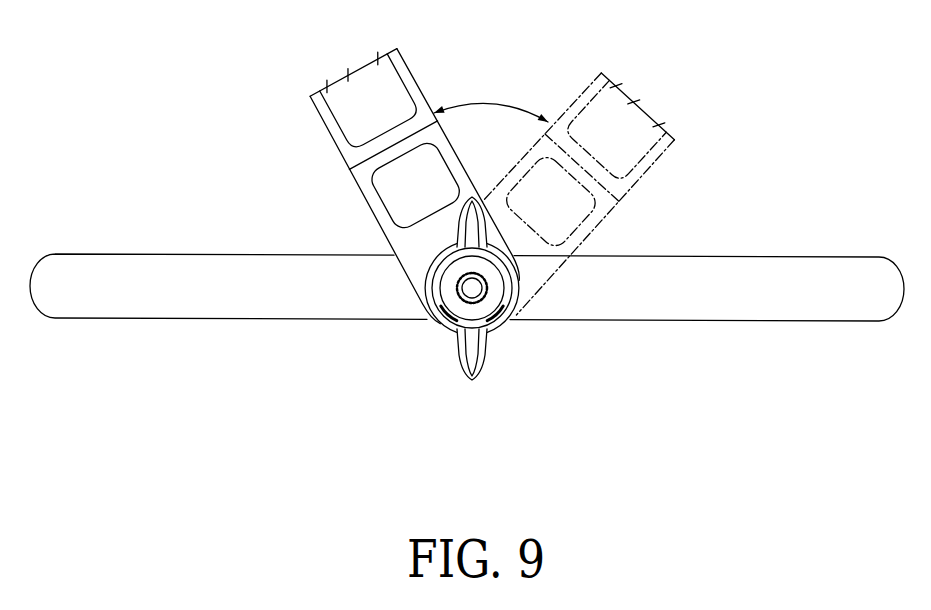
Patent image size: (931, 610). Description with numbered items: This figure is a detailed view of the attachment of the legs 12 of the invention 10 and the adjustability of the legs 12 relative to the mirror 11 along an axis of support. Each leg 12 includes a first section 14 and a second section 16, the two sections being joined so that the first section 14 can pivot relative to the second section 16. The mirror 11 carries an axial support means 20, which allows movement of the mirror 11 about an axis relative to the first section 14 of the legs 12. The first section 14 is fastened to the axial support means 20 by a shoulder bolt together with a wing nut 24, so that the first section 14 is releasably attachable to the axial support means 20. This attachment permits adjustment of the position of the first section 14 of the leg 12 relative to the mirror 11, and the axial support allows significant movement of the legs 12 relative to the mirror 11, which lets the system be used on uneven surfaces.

The invention 10 is at (467, 239).
The mirror 11 is at (273, 318).
The legs 12 is at (381, 229).
The first section 14 is at (372, 209).
The second section 16 is at (314, 108).
The axial support means 20 is at (487, 285).
The wing nut 24 is at (485, 365).